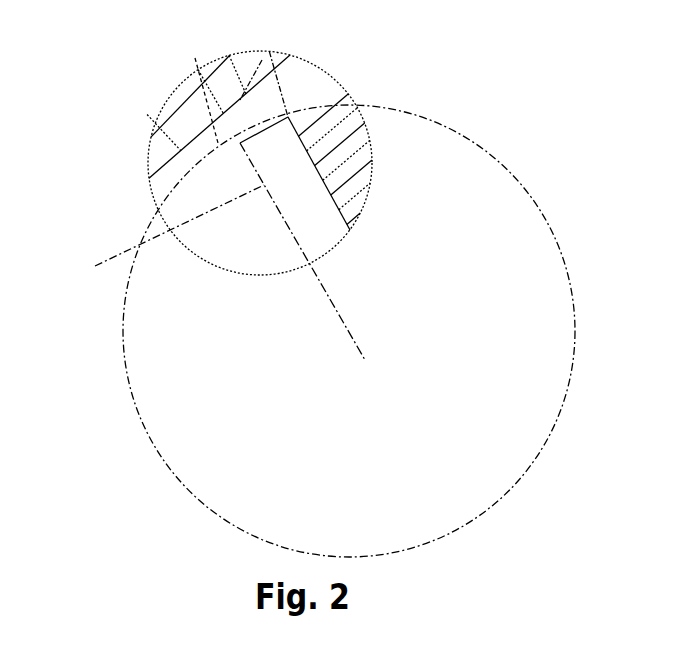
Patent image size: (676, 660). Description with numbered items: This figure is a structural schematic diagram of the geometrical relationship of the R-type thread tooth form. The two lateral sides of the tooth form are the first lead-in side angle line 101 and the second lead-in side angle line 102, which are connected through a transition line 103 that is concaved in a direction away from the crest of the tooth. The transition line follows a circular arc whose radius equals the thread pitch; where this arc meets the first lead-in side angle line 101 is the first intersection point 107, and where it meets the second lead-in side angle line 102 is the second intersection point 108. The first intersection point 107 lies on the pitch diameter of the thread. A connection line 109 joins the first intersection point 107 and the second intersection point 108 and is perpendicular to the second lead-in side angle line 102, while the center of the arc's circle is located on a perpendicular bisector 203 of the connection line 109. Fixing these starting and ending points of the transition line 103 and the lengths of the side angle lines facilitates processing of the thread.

The first lead-in side angle line 101 is at (240, 143).
The second lead-in side angle line 102 is at (384, 107).
The transition line 103 is at (240, 143).
The first intersection point 107 is at (200, 192).
The second intersection point 108 is at (288, 117).
The connection line 109 is at (202, 132).
The perpendicular bisector 203 is at (151, 237).